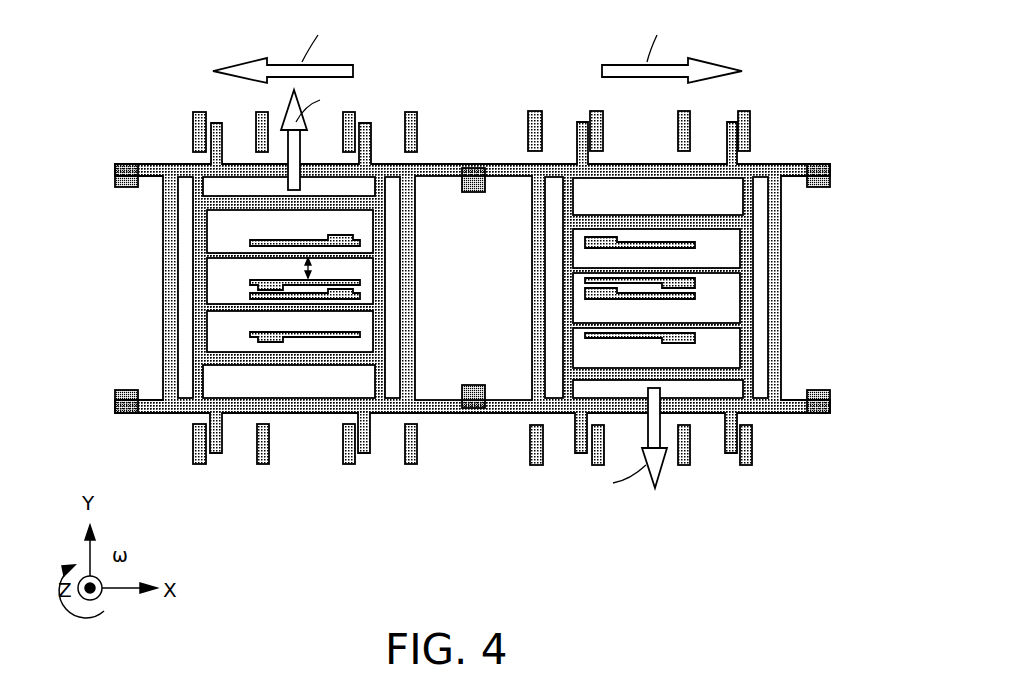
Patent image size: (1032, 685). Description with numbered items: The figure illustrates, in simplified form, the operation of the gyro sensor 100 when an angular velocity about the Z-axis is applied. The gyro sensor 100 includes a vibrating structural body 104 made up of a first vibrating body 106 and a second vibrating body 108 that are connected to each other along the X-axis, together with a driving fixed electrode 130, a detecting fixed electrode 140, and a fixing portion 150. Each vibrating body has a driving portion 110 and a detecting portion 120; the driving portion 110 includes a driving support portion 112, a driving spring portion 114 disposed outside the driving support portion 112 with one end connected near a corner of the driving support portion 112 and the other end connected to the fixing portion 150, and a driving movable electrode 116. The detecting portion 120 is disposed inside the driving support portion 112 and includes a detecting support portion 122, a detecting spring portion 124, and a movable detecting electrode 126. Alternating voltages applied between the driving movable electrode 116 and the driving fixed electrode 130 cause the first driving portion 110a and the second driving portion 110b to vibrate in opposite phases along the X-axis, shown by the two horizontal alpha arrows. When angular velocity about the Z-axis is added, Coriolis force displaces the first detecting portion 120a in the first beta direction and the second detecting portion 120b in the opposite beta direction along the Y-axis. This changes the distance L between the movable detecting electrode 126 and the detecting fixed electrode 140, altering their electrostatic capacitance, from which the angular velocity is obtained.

The gyro sensor 100 is at (477, 299).
The vibrating structural body 104 is at (812, 546).
The first vibrating body 106 is at (475, 502).
The second vibrating body 108 is at (812, 502).
The driving portion 110 is at (477, 279).
The first driving portion 110a is at (104, 470).
The second driving portion 110b is at (846, 470).
The driving support portion 112 is at (172, 371).
The driving spring portion 114 is at (152, 165).
The driving movable electrode 116 is at (217, 136).
The detecting portion 120 is at (476, 288).
The first detecting portion 120a is at (106, 282).
The second detecting portion 120b is at (844, 282).
The detecting support portion 122 is at (203, 226).
The detecting spring portion 124 is at (194, 190).
The movable detecting electrode 126 is at (218, 257).
The driving fixed electrode 130 is at (603, 128).
The detecting fixed electrode 140 is at (362, 243).
The fixing portion 150 is at (116, 177).